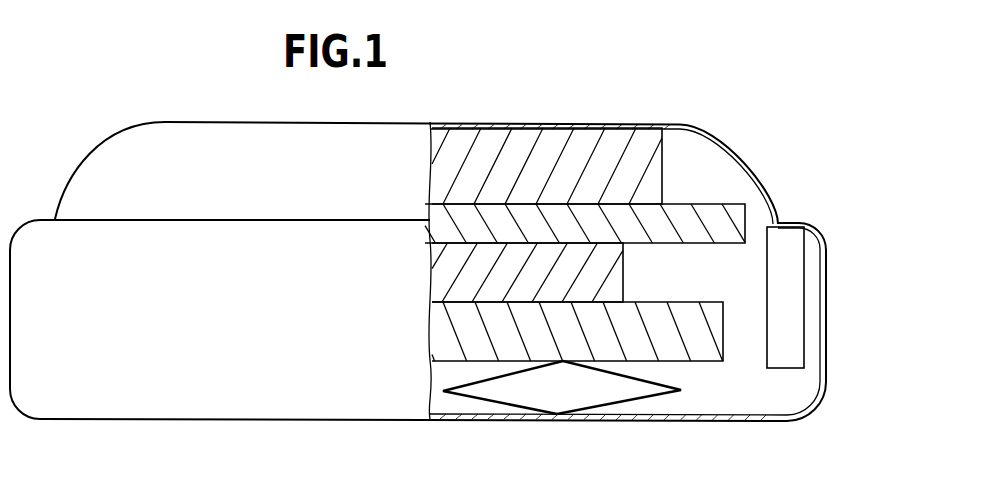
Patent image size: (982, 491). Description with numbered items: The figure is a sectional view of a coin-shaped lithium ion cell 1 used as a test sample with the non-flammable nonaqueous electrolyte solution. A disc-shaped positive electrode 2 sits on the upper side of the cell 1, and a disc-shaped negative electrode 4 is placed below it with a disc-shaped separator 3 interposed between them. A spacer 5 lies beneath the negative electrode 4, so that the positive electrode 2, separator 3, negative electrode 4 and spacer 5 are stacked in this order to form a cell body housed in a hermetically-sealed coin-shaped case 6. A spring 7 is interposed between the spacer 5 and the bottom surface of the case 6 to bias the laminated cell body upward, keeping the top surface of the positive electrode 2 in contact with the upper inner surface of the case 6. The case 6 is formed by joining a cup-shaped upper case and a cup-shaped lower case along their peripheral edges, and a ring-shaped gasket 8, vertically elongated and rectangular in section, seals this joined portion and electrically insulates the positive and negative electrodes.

The lithium ion cell 1 is at (659, 106).
The positive electrode 2 is at (579, 150).
The separator 3 is at (703, 220).
The negative electrode 4 is at (478, 282).
The spacer 5 is at (498, 337).
The case 6 is at (823, 180).
The spring 7 is at (630, 402).
The gasket 8 is at (790, 285).